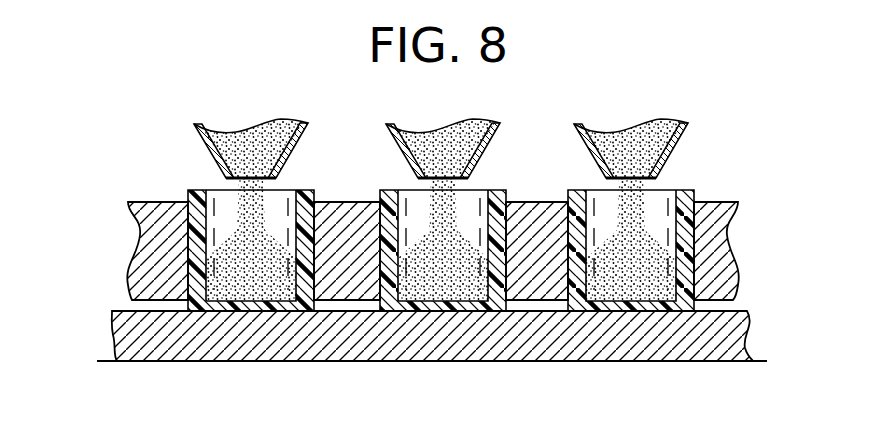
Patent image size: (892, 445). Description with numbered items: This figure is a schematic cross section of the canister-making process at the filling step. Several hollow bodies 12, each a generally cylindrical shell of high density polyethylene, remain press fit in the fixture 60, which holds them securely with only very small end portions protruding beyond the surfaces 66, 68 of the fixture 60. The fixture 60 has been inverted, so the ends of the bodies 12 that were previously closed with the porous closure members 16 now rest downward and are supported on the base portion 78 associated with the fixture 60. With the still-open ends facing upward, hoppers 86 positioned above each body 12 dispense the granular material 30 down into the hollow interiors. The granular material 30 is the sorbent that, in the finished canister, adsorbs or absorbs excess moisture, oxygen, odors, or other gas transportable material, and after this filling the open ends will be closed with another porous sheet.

The hollow body 12 is at (186, 219).
The porous closure member 16 is at (243, 303).
The granular material 30 is at (238, 210).
The fixture 60 is at (150, 243).
The surface of the fixture 66 is at (532, 311).
The surface of the fixture 68 is at (534, 203).
The base portion 78 is at (757, 340).
The hopper 86 is at (196, 135).